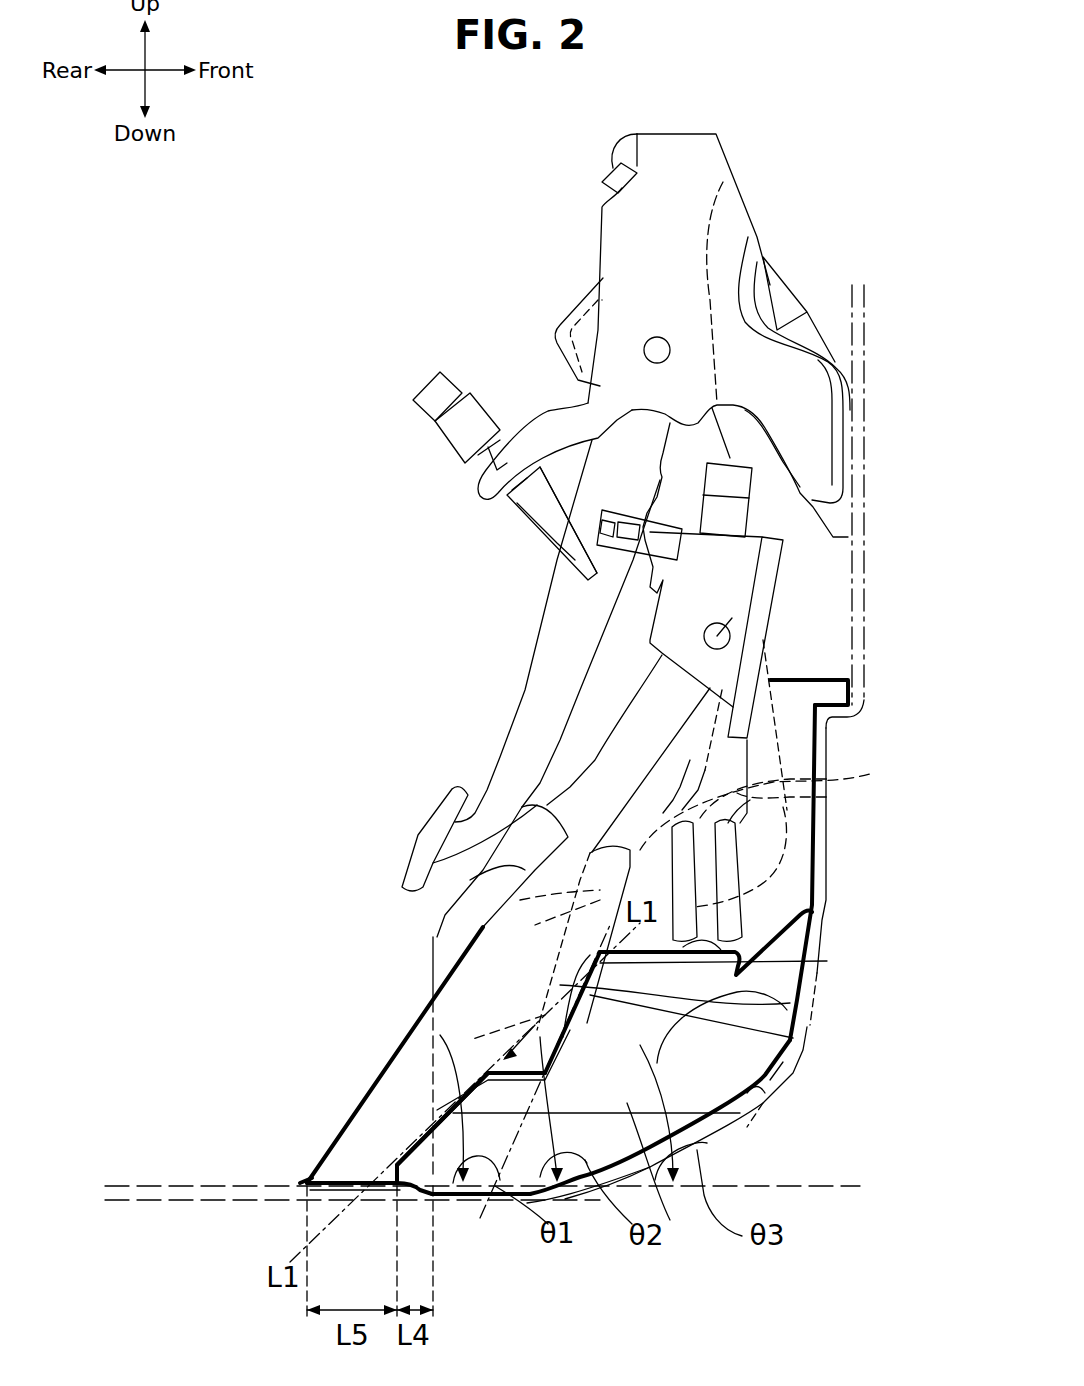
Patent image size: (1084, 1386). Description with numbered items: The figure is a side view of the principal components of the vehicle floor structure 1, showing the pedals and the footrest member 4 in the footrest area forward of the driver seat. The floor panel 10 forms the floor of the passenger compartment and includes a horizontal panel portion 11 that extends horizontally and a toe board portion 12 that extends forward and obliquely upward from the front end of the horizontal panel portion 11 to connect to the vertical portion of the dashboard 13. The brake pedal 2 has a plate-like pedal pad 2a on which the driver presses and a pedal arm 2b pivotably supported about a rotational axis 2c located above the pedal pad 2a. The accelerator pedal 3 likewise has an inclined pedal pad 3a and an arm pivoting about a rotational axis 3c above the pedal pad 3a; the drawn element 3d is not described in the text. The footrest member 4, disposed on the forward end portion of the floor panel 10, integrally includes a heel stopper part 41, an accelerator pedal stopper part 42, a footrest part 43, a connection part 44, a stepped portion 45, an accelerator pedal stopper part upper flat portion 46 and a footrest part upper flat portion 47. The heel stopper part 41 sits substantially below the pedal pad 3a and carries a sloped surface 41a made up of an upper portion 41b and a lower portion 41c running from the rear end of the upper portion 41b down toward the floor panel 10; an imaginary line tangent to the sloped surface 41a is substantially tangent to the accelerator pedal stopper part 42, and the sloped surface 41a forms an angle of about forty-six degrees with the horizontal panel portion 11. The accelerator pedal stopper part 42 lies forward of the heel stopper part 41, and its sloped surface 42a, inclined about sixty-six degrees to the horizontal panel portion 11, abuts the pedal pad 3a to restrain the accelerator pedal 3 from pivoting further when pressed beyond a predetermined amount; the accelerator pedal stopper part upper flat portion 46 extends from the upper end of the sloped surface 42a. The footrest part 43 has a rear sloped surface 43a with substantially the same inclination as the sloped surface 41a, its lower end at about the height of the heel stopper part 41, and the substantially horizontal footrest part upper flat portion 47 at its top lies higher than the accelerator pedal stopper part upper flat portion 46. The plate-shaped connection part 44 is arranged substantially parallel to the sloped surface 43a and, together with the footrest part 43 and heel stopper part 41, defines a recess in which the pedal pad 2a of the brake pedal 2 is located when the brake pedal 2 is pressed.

The floor structure 1 is at (440, 280).
The brake pedal 2 is at (440, 830).
The pedal pad 2a is at (453, 802).
The pedal arm 2b is at (560, 632).
The rotational axis 2c is at (647, 338).
The accelerator pedal 3 is at (475, 910).
The pedal pad 3a is at (470, 938).
The rotational axis 3c is at (727, 628).
The support upper portion 3d is at (510, 872).
The footrest member 4 is at (416, 967).
The floor panel 10 is at (138, 1172).
The horizontal panel portion 11 is at (205, 1186).
The toe board portion 12 is at (783, 1062).
The dashboard 13 is at (870, 300).
The heel stopper part 41 is at (482, 1150).
The sloped surface 41a is at (500, 1120).
The upper portion 41b is at (440, 1035).
The lower portion 41c is at (425, 1168).
The accelerator pedal stopper part 42 is at (793, 1038).
The sloped surface 42a is at (790, 1003).
The footrest part 43 is at (455, 1012).
The sloped surface 43a is at (430, 987).
The connection part 44 is at (818, 818).
The stepped portion 45 is at (632, 1183).
The accelerator pedal stopper part upper flat portion 46 is at (800, 962).
The footrest part upper flat portion 47 is at (783, 680).